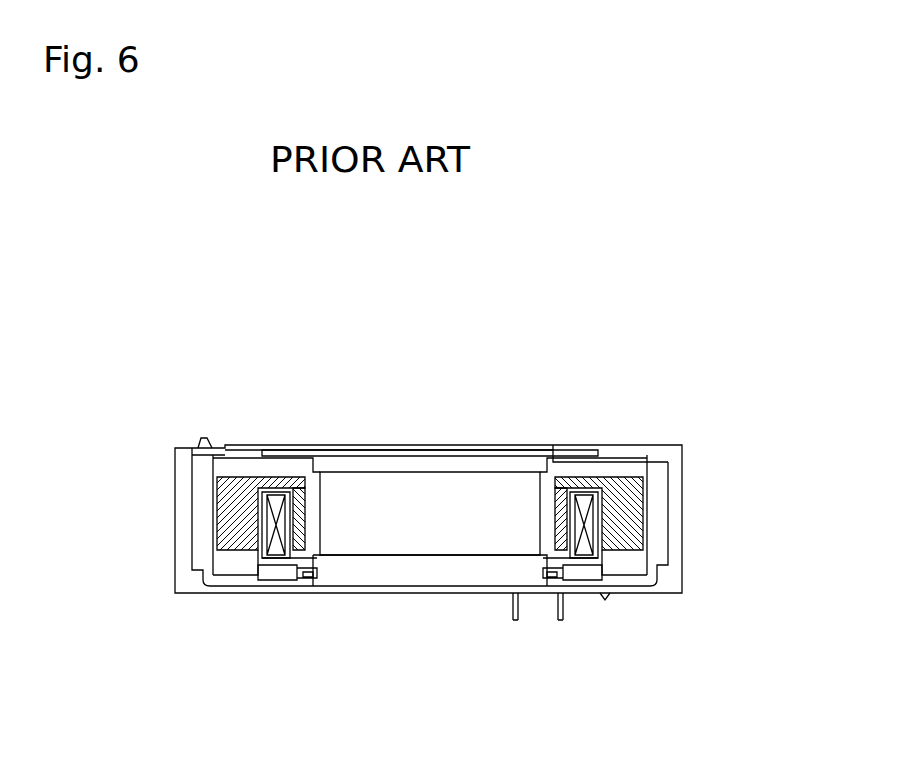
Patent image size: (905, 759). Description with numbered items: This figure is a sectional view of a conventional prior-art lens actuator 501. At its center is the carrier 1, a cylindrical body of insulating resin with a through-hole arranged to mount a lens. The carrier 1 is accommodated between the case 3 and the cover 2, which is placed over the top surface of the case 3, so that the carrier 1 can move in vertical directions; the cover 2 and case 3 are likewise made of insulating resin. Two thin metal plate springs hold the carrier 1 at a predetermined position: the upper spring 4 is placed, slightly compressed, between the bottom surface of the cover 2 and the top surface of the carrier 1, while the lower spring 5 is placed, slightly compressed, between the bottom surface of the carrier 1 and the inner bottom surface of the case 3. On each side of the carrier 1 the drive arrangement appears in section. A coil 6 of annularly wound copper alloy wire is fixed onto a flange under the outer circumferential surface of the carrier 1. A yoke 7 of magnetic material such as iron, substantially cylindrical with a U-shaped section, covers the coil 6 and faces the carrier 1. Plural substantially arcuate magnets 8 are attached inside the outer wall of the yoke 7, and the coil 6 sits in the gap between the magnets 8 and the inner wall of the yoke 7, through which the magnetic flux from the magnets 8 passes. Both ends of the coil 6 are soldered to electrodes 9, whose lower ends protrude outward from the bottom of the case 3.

The carrier 1 is at (455, 493).
The cover 2 is at (680, 458).
The case 3 is at (635, 583).
The upper spring 4 is at (308, 458).
The lower spring 5 is at (302, 580).
The coil 6 is at (598, 527).
The yoke 7 is at (643, 492).
The magnets 8 is at (635, 515).
The electrodes 9 is at (515, 620).
The lens actuator 501 is at (718, 433).